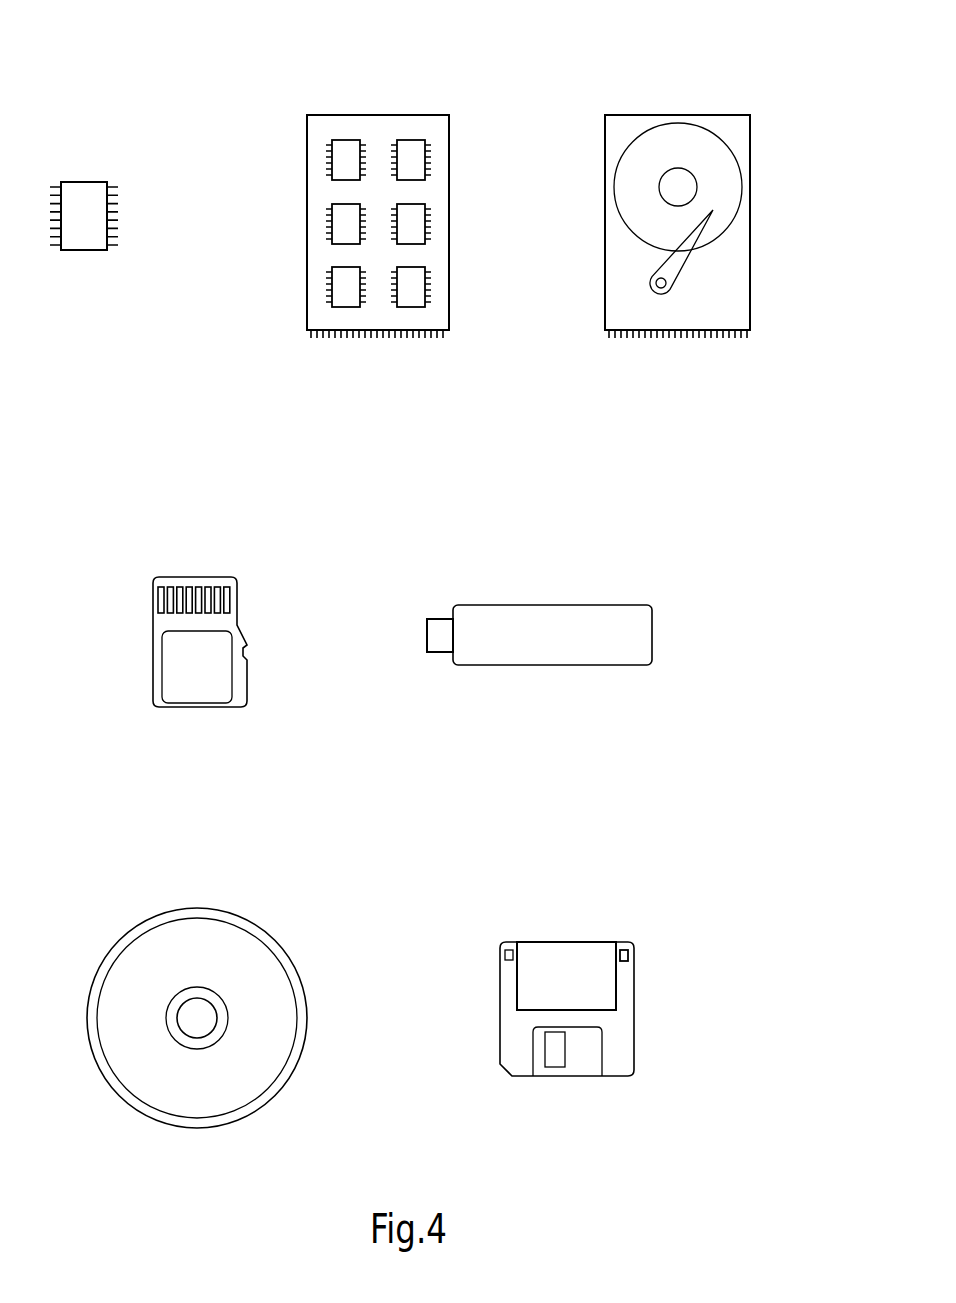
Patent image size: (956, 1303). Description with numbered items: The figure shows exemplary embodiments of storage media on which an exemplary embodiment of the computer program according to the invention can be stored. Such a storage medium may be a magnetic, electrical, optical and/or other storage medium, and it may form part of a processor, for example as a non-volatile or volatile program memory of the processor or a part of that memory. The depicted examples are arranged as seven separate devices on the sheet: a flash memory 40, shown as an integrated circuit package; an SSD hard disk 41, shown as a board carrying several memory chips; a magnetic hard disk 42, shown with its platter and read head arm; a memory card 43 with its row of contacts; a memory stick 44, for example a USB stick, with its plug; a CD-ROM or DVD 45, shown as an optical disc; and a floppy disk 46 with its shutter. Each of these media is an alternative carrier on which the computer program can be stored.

The flash memory 40 is at (114, 156).
The SSD hard disk 41 is at (414, 169).
The magnetic hard disk 42 is at (714, 169).
The memory card 43 is at (229, 583).
The memory stick 44 is at (569, 575).
The CD-ROM or DVD 45 is at (214, 973).
The floppy disk 46 is at (596, 950).